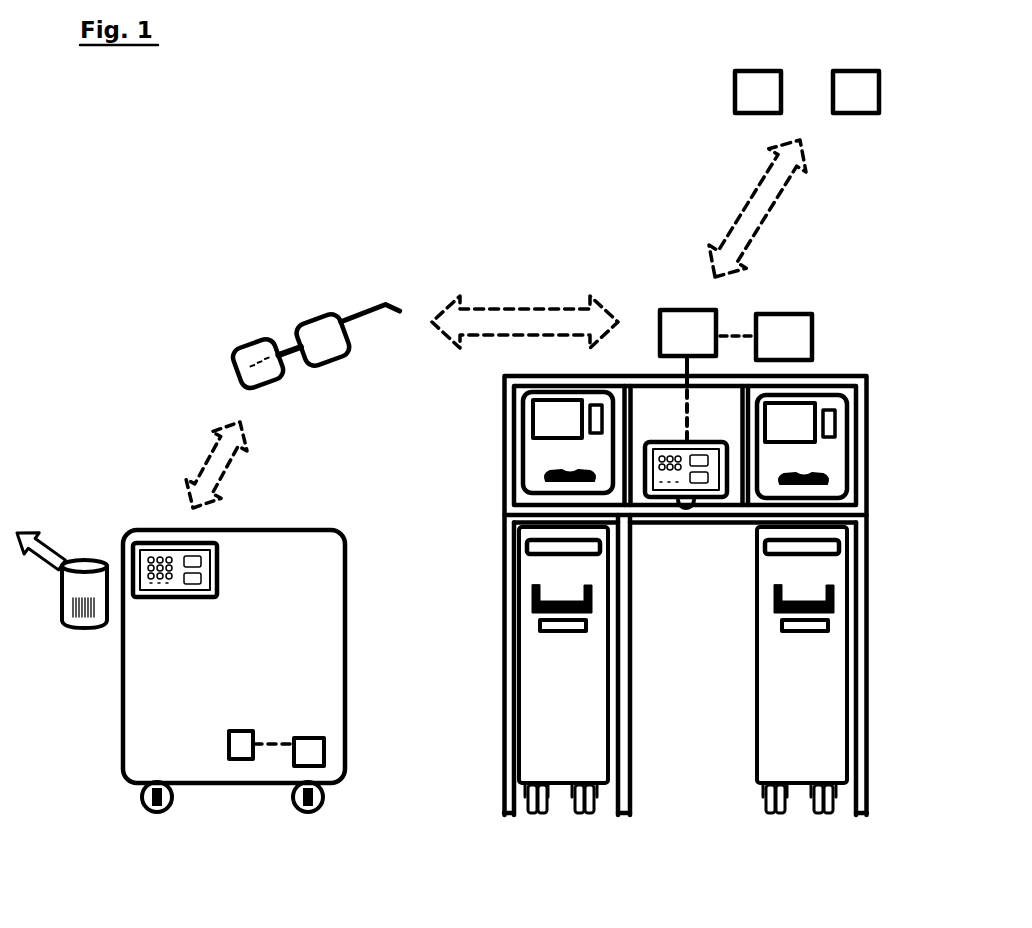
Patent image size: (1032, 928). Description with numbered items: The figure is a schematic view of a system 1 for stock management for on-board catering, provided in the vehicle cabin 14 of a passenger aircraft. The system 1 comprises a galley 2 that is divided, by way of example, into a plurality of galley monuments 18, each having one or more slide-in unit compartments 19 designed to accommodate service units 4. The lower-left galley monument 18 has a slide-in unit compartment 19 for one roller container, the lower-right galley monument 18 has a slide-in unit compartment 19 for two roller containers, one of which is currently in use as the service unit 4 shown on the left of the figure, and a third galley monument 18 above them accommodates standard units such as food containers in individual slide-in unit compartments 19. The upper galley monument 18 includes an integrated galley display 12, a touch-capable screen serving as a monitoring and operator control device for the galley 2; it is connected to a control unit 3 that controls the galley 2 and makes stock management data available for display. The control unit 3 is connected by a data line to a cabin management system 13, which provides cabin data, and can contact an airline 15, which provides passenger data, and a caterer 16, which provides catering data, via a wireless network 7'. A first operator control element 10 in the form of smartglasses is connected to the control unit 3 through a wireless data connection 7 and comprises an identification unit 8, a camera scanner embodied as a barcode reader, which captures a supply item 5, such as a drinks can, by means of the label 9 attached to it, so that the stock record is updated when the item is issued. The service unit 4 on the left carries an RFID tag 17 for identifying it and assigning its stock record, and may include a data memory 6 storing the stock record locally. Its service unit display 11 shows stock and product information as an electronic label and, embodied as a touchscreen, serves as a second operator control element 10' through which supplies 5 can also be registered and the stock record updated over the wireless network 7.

The system 1 is at (114, 128).
The galley 2 is at (882, 332).
The control unit 3 is at (664, 308).
The service unit 4 is at (538, 451).
The supply item 5 is at (82, 560).
The data memory 6 is at (231, 730).
The wireless data connection 7 is at (392, 381).
The wireless network 7' is at (757, 208).
The identification unit 8 is at (335, 313).
The label 9 is at (86, 626).
The first operator control element 10 is at (249, 348).
The second operator control element 10' is at (181, 602).
The service unit display 11 is at (220, 569).
The galley display 12 is at (704, 438).
The cabin management system 13 is at (789, 312).
The vehicle cabin 14 is at (436, 667).
The airline 15 is at (771, 105).
The caterer 16 is at (869, 105).
The RFID tag 17 is at (300, 737).
The galley monument 18 is at (880, 455).
The slide-in unit compartment 19 is at (711, 609).